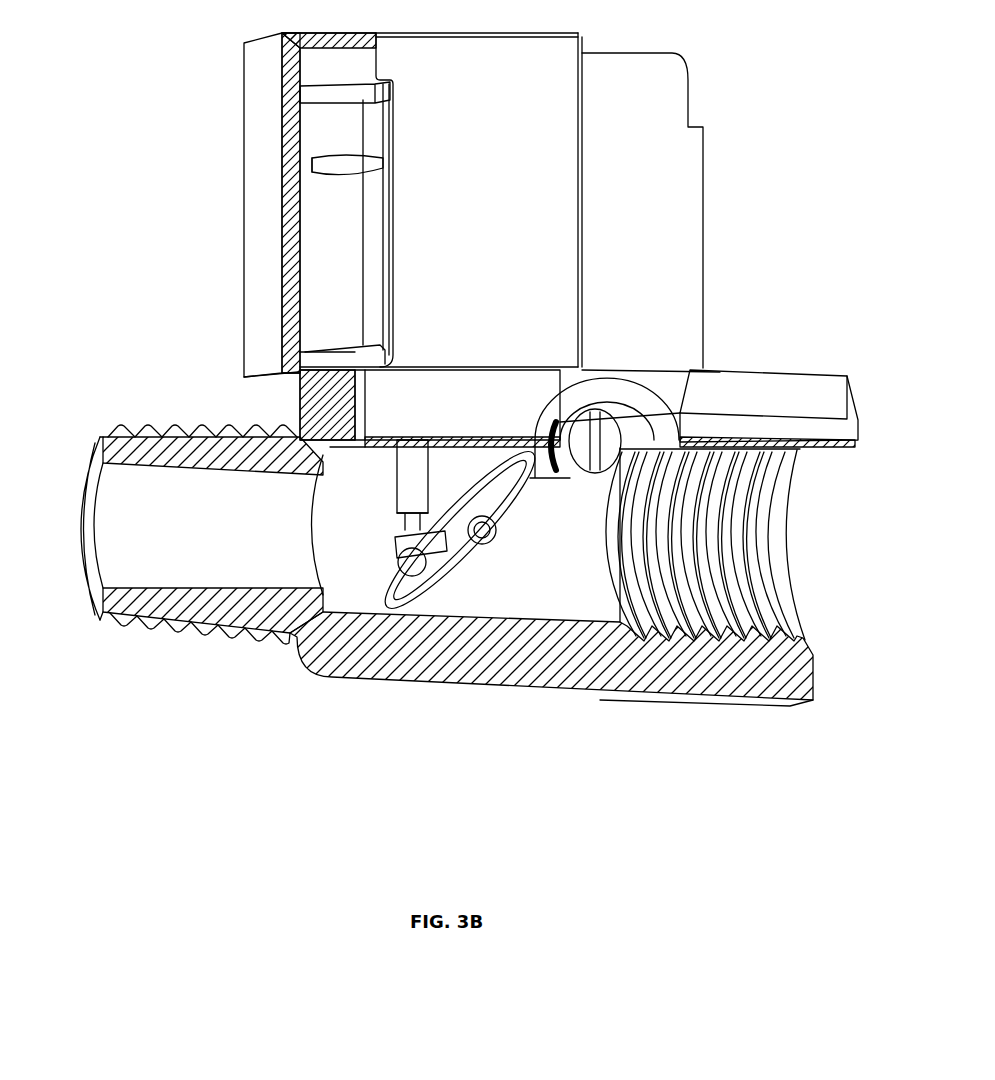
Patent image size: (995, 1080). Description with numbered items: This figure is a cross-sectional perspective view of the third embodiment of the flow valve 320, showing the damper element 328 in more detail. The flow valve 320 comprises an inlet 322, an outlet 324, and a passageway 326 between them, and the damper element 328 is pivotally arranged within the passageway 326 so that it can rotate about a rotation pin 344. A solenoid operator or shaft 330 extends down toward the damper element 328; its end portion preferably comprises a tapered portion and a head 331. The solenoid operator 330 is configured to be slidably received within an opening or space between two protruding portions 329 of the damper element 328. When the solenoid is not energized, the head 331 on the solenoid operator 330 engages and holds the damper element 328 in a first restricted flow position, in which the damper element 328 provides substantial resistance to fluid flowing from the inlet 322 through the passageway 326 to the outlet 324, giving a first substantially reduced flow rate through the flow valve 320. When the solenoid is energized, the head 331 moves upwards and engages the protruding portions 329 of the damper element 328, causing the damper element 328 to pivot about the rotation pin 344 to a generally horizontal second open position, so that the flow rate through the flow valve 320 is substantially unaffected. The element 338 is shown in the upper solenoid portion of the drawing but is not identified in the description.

The flow valve 320 is at (551, 327).
The inlet 322 is at (115, 521).
The outlet 324 is at (800, 543).
The passageway 326 is at (580, 603).
The damper element 328 is at (400, 603).
The protruding portions 329 is at (430, 560).
The solenoid operator or shaft 330 is at (415, 497).
The head 331 is at (407, 555).
The piston 338 is at (312, 166).
The rotation pin 344 is at (607, 440).